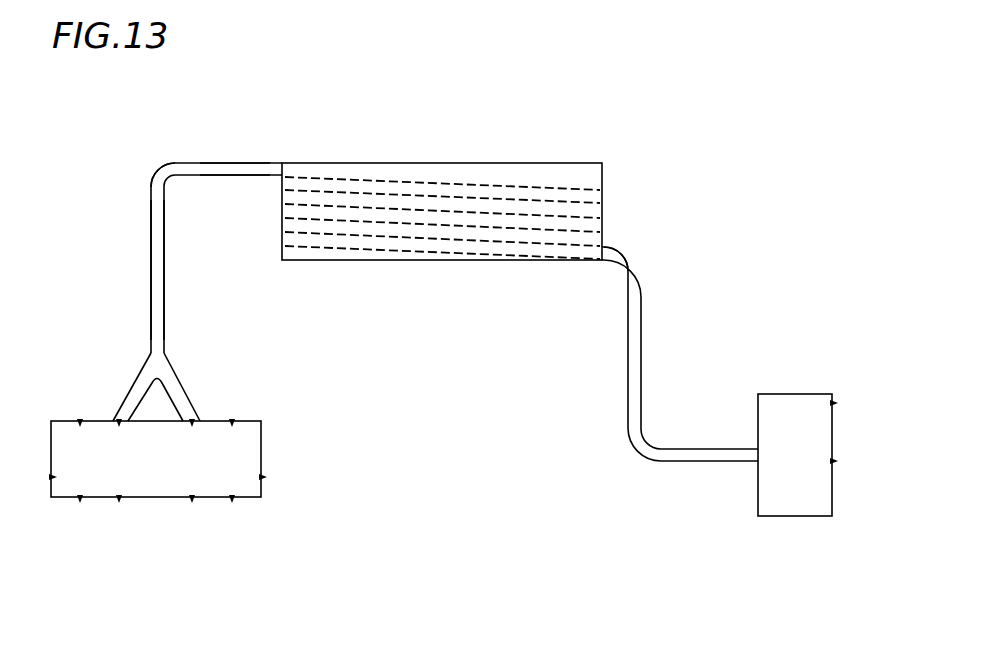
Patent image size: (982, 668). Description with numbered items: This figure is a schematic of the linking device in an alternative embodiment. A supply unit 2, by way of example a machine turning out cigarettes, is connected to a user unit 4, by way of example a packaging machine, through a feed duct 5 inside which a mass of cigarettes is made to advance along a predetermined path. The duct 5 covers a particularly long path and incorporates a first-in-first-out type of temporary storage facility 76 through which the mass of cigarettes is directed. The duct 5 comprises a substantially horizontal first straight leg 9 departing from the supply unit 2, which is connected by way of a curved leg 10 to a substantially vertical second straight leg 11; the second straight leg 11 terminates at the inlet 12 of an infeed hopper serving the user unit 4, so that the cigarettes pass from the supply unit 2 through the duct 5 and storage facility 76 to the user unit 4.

The supply unit 2 is at (802, 466).
The user unit 4 is at (167, 466).
The feed duct 5 is at (259, 159).
The first straight leg 9 is at (220, 160).
The curved leg 10 is at (154, 161).
The second straight leg 11 is at (142, 273).
The inlet 12 is at (193, 391).
The temporary storage facility 76 is at (480, 152).